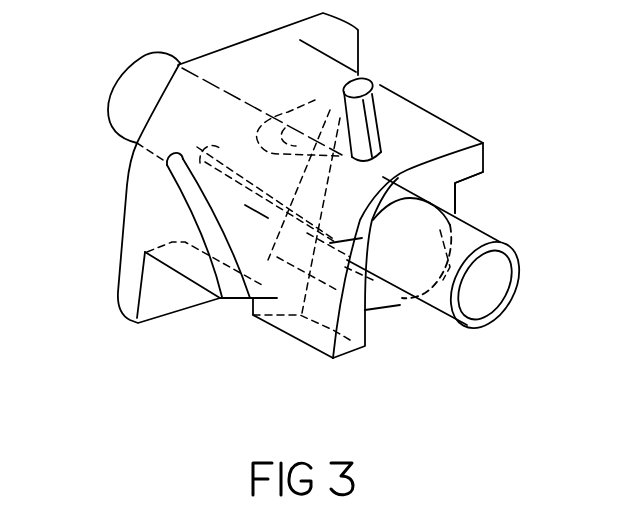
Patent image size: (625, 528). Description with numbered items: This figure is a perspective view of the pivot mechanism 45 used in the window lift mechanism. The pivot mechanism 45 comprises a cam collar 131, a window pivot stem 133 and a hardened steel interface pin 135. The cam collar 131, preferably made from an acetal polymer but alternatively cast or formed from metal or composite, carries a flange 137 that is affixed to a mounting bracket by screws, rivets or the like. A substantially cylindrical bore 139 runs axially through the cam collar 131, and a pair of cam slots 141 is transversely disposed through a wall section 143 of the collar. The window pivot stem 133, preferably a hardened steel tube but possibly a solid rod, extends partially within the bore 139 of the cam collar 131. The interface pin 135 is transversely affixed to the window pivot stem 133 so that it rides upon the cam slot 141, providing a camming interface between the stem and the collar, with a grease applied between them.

The pivot mechanism 45 is at (405, 406).
The cam collar 131 is at (153, 192).
The window pivot stem 133 is at (478, 242).
The interface pin 135 is at (362, 88).
The flange 137 is at (155, 299).
The cylindrical bore 139 is at (455, 215).
The cam slots 141 is at (458, 102).
The wall section 143 is at (400, 305).